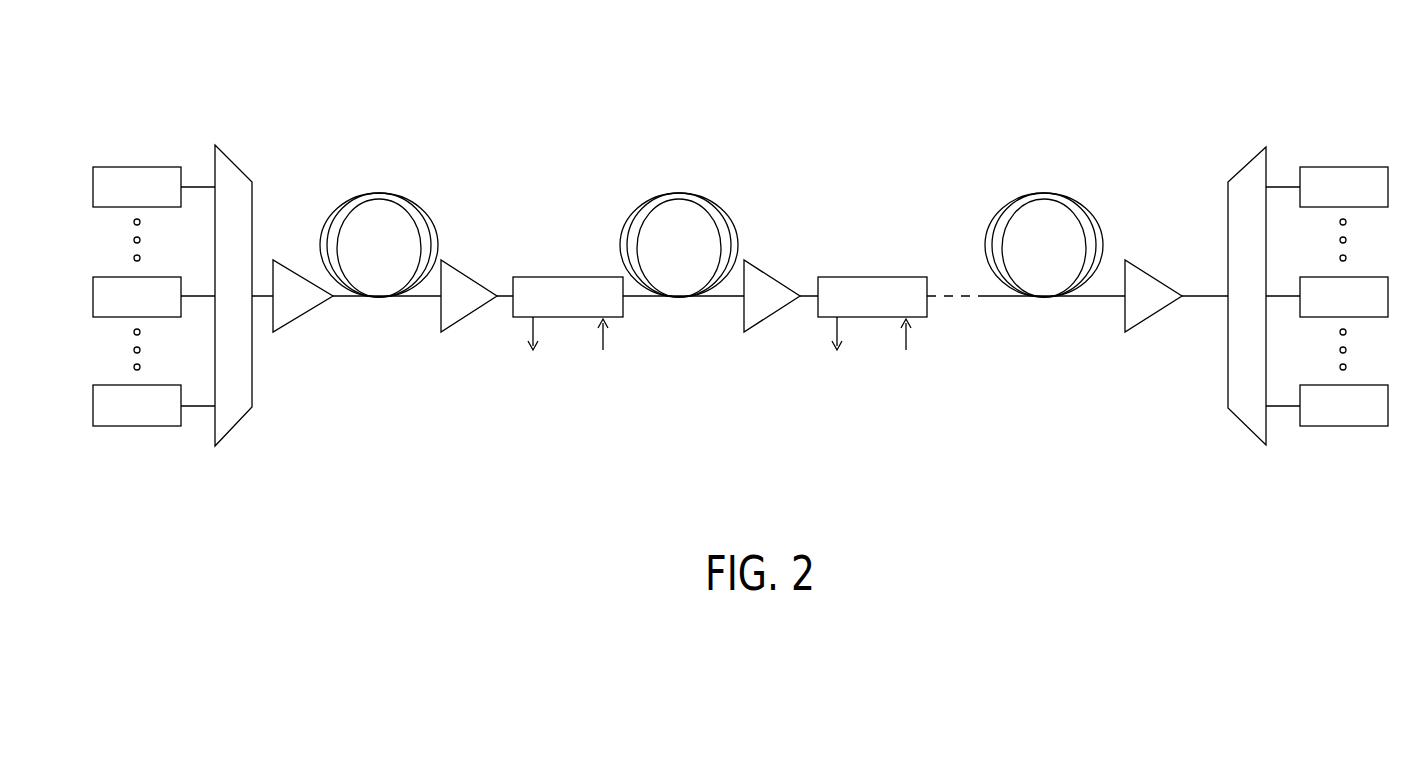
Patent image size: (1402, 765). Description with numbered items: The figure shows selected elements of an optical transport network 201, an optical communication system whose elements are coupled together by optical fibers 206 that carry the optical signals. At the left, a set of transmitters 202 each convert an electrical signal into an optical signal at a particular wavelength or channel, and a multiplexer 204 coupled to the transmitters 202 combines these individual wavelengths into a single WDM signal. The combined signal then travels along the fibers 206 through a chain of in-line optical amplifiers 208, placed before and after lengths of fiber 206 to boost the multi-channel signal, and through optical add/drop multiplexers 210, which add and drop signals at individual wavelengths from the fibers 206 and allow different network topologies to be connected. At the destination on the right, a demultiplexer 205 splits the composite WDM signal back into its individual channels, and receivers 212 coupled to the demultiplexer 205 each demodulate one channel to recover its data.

The optical transport network 201 is at (172, 58).
The transmitters 202 is at (122, 167).
The multiplexer 204 is at (234, 160).
The demultiplexer 205 is at (1251, 160).
The optical fibers 206 is at (374, 194).
The optical amplifiers 208 is at (297, 322).
The optical add/drop multiplexers 210 is at (556, 277).
The receivers 212 is at (1362, 167).